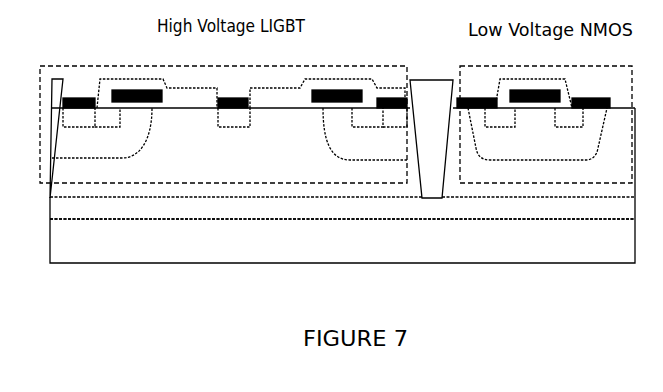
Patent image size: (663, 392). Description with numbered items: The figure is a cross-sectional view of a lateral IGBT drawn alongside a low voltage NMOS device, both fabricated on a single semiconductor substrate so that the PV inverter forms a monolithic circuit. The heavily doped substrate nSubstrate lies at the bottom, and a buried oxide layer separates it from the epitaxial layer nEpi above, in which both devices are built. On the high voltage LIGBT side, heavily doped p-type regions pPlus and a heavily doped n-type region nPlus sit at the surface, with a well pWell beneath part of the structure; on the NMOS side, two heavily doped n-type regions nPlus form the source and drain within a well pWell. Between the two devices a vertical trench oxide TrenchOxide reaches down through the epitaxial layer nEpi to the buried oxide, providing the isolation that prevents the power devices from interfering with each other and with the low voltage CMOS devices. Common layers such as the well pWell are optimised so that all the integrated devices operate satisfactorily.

The n+ substrate nSubstrate is at (342, 185).
The n-epi layer nEpi is at (342, 138).
The p+ regions pPlus is at (235, 117).
The n+ regions nPlus is at (467, 117).
The p-well pWell is at (329, 134).
The trench oxide TrenchOxide is at (428, 157).